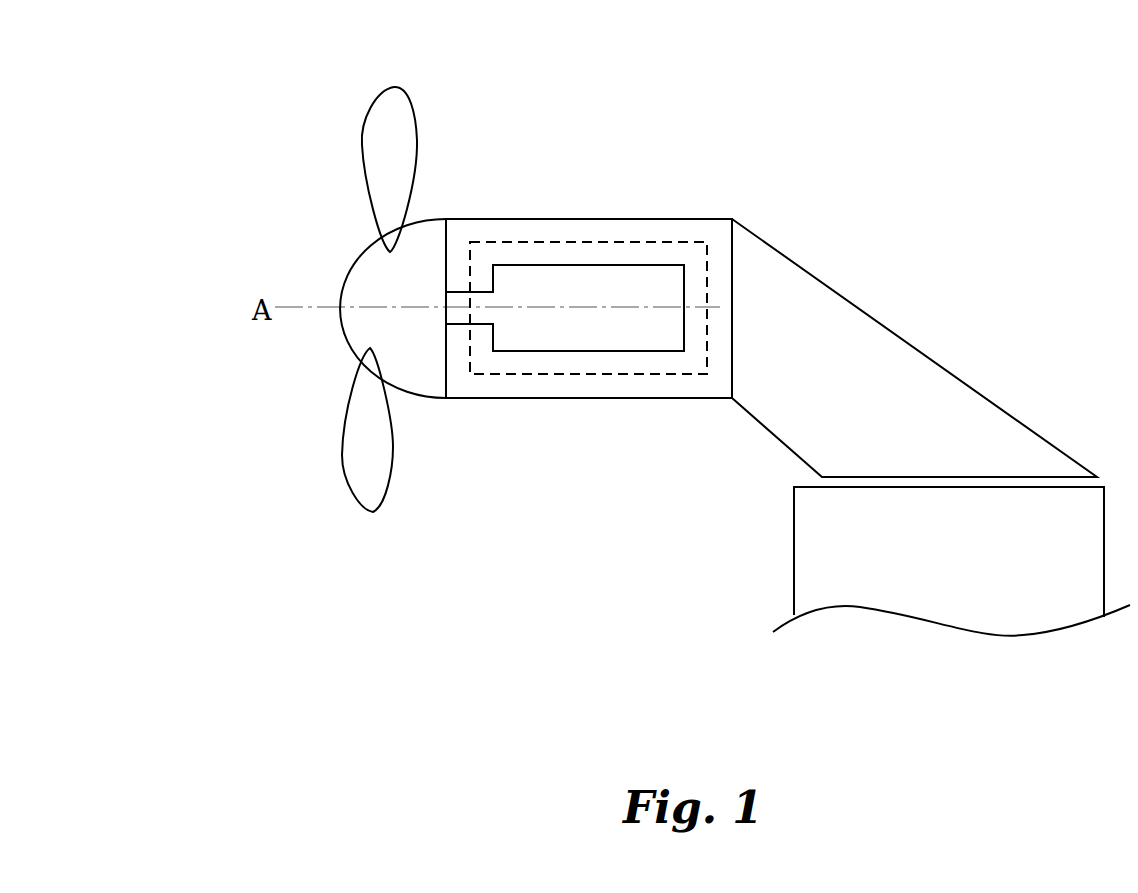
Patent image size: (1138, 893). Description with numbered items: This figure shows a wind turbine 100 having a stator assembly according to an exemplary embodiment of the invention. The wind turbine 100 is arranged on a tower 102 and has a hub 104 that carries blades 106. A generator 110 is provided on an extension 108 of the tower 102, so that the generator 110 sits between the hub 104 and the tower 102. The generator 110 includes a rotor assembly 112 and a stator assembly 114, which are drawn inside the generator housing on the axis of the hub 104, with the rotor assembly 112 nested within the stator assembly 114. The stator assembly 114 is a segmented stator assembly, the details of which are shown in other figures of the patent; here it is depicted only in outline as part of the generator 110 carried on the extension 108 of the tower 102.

The wind turbine 100 is at (177, 113).
The tower 102 is at (794, 560).
The hub 104 is at (345, 280).
The blades 106 is at (375, 102).
The extension 108 is at (932, 358).
The generator 110 is at (493, 218).
The rotor assembly 112 is at (665, 265).
The stator assembly 114 is at (588, 242).